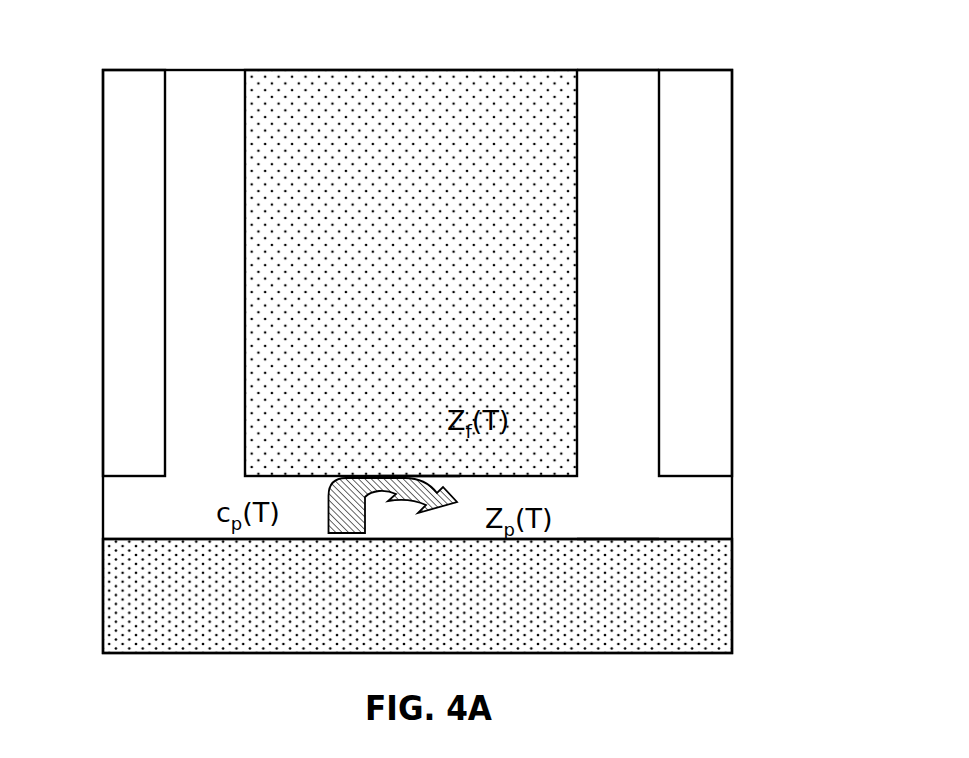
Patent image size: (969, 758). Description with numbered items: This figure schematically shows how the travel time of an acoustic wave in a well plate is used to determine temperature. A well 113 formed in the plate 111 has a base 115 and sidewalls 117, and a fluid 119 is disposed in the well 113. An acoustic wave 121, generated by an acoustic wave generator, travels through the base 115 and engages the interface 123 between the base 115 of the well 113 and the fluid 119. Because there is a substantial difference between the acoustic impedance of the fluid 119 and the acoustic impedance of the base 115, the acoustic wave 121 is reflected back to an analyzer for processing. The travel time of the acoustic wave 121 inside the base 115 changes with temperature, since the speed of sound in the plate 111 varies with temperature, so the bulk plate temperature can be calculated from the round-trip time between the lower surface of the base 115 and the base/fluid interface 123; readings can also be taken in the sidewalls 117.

The plate 111 is at (123, 325).
The well 113 is at (660, 202).
The base 115 is at (573, 517).
The sidewalls 117 is at (652, 278).
The fluid 119 is at (520, 78).
The acoustic wave 121 is at (343, 533).
The interface 123 is at (417, 468).